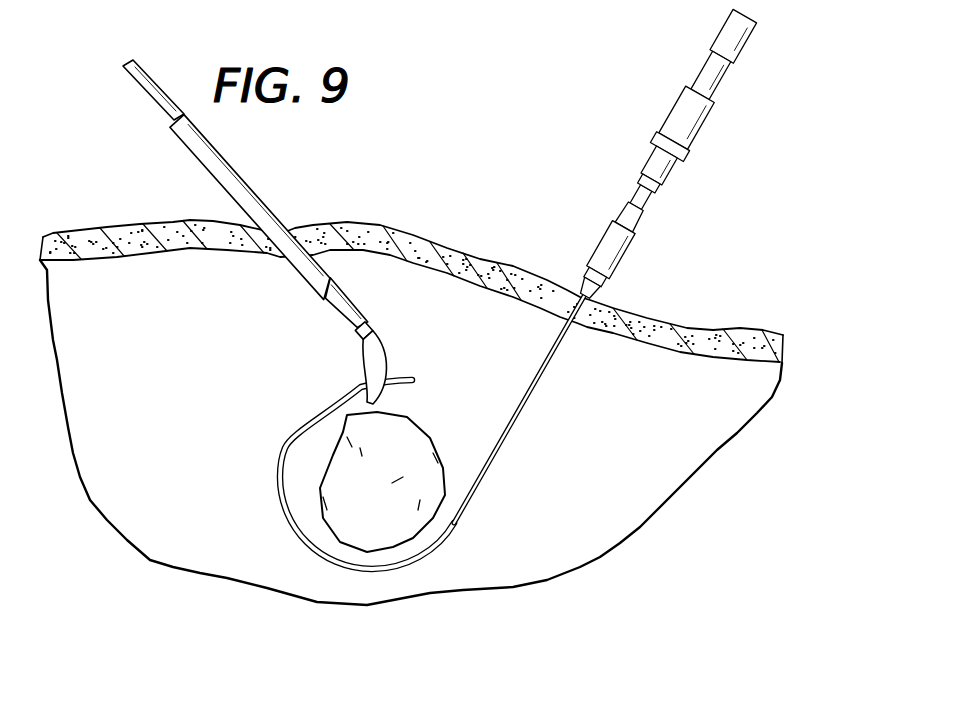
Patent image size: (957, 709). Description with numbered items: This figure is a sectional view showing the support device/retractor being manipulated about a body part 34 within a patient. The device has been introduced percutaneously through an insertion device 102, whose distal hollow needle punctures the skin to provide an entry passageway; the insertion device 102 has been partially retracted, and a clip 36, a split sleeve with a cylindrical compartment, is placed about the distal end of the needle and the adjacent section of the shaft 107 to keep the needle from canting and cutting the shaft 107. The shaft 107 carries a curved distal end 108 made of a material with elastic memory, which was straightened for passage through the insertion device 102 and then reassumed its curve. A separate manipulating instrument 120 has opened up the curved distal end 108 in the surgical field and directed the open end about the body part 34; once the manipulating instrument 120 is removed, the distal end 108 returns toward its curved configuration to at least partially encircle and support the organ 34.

The body part 34 is at (420, 438).
The clip 36 is at (628, 263).
The insertion device 102 is at (692, 157).
The shaft 107 is at (505, 451).
The curved distal end 108 is at (285, 443).
The manipulating instrument 120 is at (353, 303).